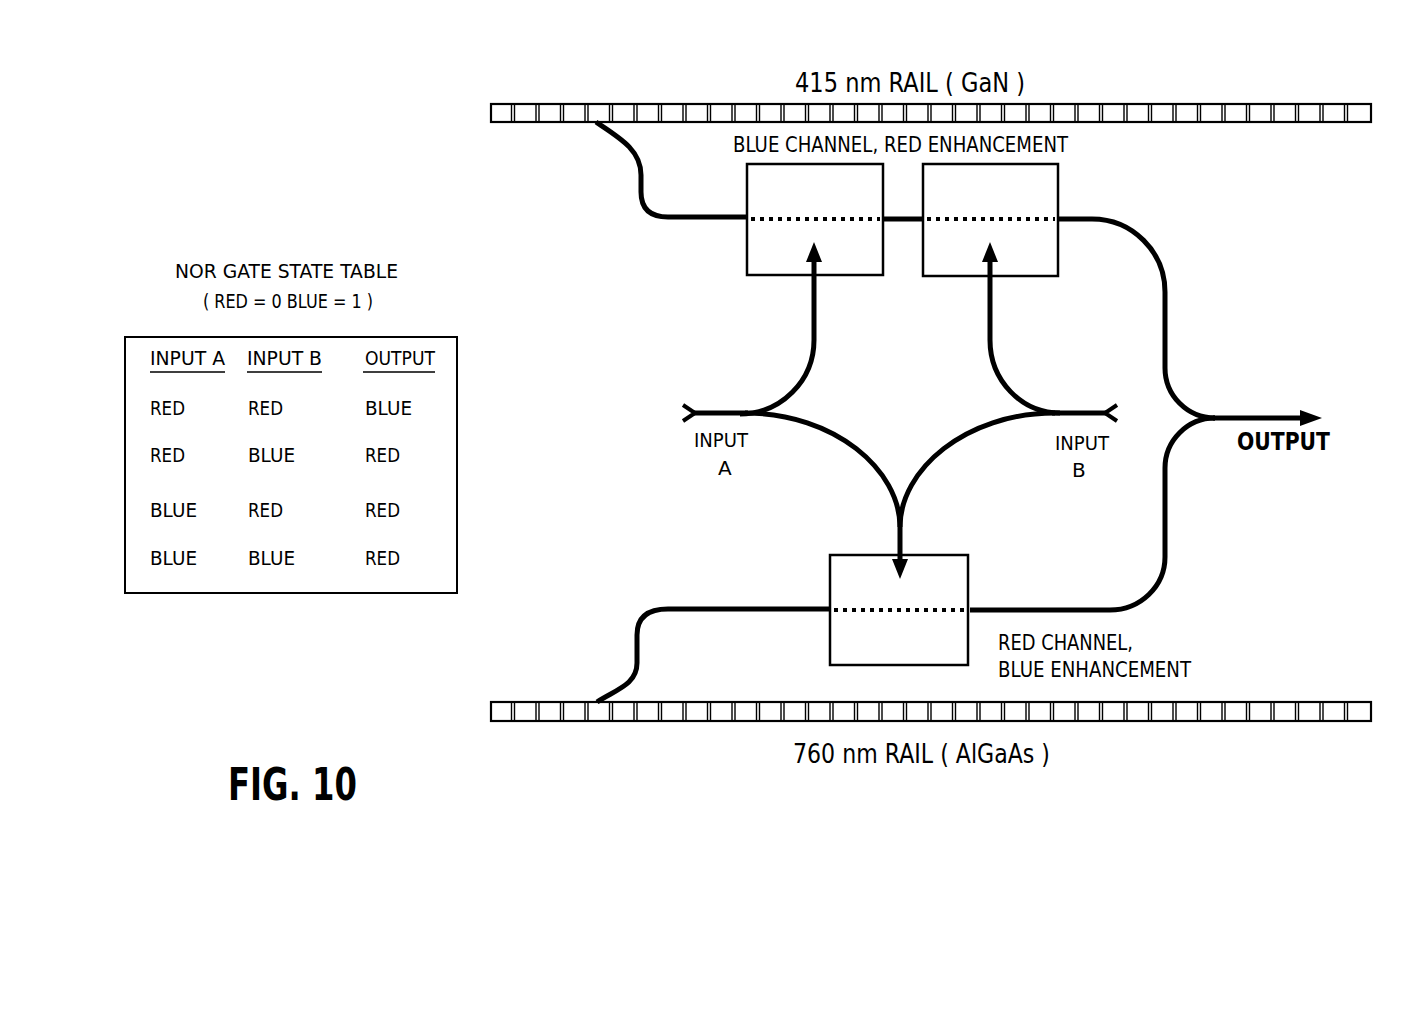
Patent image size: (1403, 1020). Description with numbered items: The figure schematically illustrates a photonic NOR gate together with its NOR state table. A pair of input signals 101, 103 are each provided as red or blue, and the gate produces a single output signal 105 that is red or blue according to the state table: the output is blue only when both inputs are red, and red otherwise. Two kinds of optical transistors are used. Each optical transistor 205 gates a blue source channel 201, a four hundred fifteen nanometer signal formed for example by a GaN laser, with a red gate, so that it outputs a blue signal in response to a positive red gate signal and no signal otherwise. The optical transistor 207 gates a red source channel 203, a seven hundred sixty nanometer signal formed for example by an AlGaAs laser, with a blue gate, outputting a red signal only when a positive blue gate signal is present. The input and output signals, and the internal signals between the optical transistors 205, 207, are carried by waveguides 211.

The input signal 101 is at (673, 413).
The input signal 103 is at (1082, 410).
The output signal 105 is at (1297, 413).
The blue source channel 201 is at (547, 123).
The red source channel 203 is at (553, 701).
The optical transistor 205 is at (747, 240).
The optical transistor 207 is at (830, 570).
The waveguide 211 is at (1162, 268).